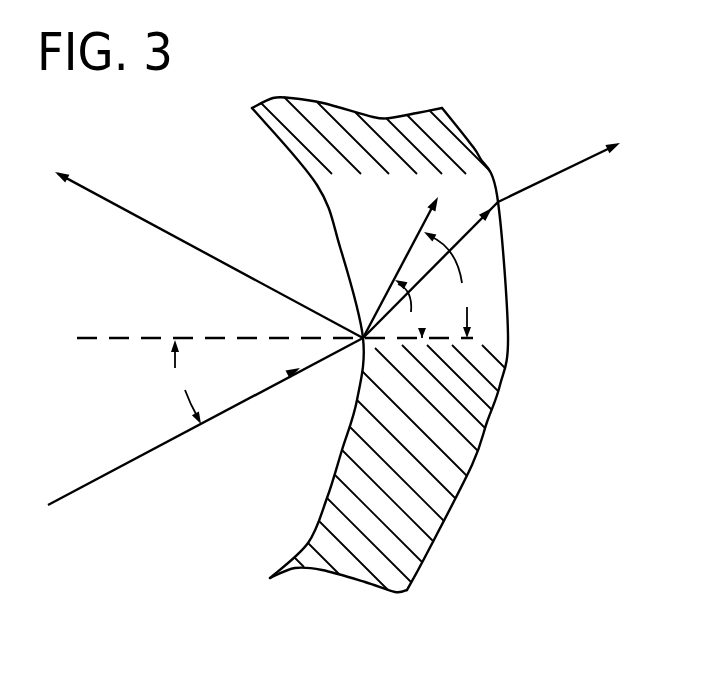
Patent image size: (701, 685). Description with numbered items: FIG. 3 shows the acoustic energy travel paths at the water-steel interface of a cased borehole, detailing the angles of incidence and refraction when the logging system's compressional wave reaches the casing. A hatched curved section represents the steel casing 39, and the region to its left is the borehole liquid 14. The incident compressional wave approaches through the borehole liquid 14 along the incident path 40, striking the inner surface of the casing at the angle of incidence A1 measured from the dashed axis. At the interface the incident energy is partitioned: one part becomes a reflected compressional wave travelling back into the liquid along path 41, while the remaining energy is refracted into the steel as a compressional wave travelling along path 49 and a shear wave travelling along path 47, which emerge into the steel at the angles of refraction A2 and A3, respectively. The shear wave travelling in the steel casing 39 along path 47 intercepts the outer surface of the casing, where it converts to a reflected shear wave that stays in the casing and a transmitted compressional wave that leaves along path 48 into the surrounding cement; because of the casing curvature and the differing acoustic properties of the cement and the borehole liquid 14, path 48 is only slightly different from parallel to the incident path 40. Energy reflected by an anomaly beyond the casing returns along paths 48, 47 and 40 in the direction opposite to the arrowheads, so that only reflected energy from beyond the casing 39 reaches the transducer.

The borehole liquid 14 is at (186, 162).
The steel casing 39 is at (500, 387).
The incident path 40 is at (235, 407).
The reflected compressional wave path 41 is at (200, 249).
The refracted shear wave path 47 is at (466, 233).
The transmitted compressional wave path 48 is at (542, 178).
The refracted compressional wave path 49 is at (409, 246).
The angle of incidence A1 is at (183, 382).
The angle of refraction of compressional wave A2 is at (419, 309).
The angle of refraction of shear wave A3 is at (456, 285).